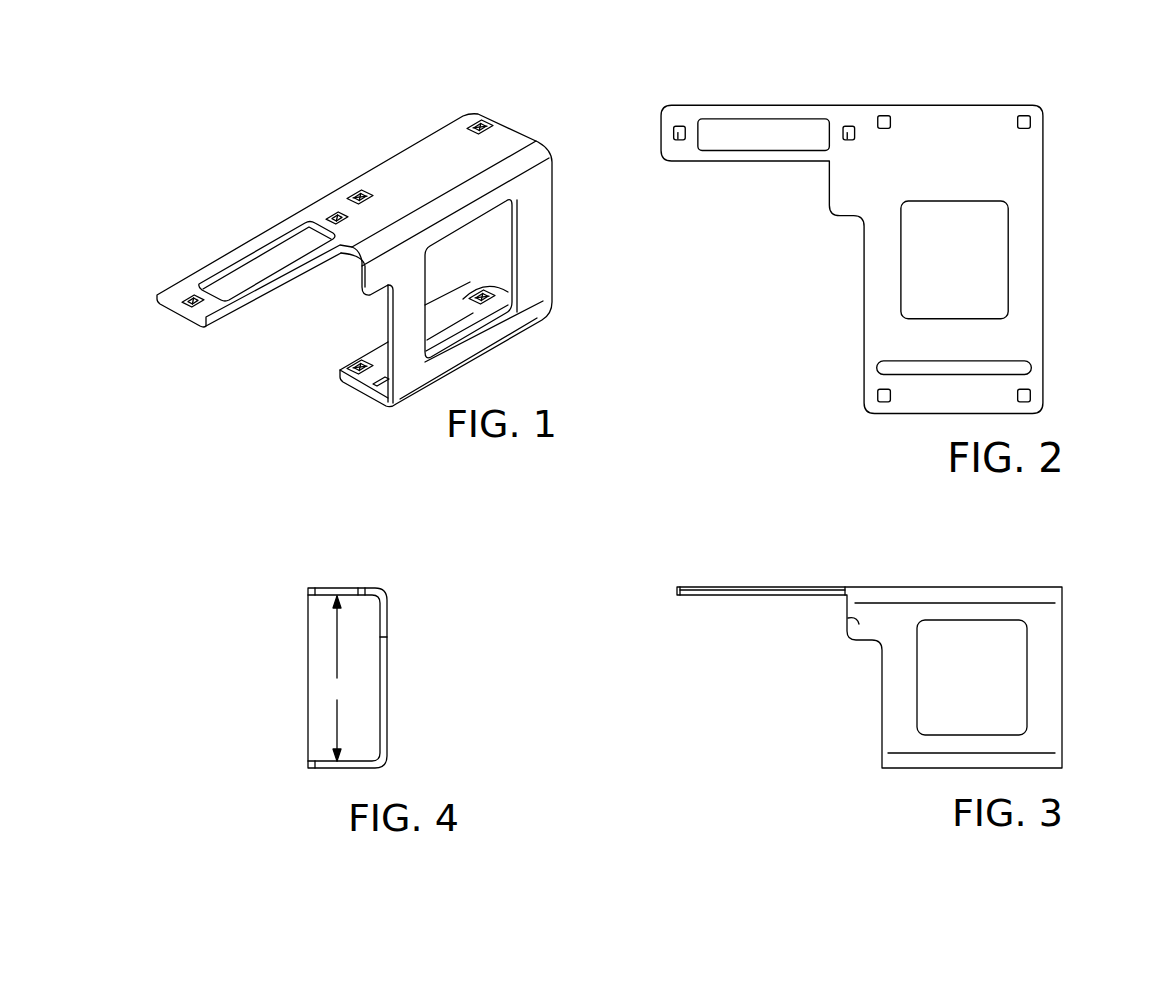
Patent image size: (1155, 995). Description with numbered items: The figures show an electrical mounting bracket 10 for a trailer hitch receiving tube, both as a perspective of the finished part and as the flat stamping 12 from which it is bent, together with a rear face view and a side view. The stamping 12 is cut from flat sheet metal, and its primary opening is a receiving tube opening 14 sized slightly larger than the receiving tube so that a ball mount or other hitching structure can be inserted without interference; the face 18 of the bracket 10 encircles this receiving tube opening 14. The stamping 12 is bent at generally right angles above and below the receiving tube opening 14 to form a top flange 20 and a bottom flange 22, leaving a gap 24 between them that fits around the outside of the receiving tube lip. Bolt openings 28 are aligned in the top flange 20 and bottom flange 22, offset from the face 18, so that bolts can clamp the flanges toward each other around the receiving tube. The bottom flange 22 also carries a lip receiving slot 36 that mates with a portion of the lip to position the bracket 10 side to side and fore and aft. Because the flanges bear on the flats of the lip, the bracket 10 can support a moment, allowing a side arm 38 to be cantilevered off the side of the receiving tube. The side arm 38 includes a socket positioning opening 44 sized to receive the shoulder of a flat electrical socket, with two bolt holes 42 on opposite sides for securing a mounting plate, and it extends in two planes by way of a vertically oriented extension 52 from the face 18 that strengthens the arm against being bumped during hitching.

In FIG. 1, the electrical mounting bracket 10 is at (255, 122).
In FIG. 3, the electrical mounting bracket 10 is at (745, 693).
In FIG. 4, the electrical mounting bracket 10 is at (248, 647).
In FIG. 2, the stamping 12 is at (998, 294).
In FIG. 1, the receiving tube opening 14 is at (493, 268).
In FIG. 2, the receiving tube opening 14 is at (942, 252).
In FIG. 3, the receiving tube opening 14 is at (972, 695).
In FIG. 1, the face 18 is at (532, 302).
In FIG. 2, the face 18 is at (1005, 280).
In FIG. 3, the face 18 is at (905, 685).
In FIG. 4, the face 18 is at (388, 697).
In FIG. 1, the top flange 20 is at (433, 160).
In FIG. 2, the top flange 20 is at (968, 150).
In FIG. 3, the top flange 20 is at (795, 586).
In FIG. 4, the top flange 20 is at (340, 587).
In FIG. 1, the bottom flange 22 is at (377, 355).
In FIG. 2, the bottom flange 22 is at (940, 383).
In FIG. 4, the bottom flange 22 is at (345, 770).
In FIG. 4, the gap 24 is at (337, 678).
In FIG. 1, the bolt openings 28 is at (487, 122).
In FIG. 2, the bolt openings 28 is at (1005, 112).
In FIG. 1, the lip receiving slot 36 is at (473, 327).
In FIG. 2, the lip receiving slot 36 is at (880, 350).
In FIG. 1, the side arm 38 is at (193, 285).
In FIG. 2, the side arm 38 is at (737, 108).
In FIG. 3, the side arm 38 is at (765, 596).
In FIG. 1, the bolt holes 42 is at (195, 302).
In FIG. 2, the bolt holes 42 is at (838, 135).
In FIG. 1, the socket positioning opening 44 is at (293, 250).
In FIG. 2, the socket positioning opening 44 is at (760, 123).
In FIG. 1, the extension 52 is at (370, 295).
In FIG. 2, the extension 52 is at (826, 202).
In FIG. 3, the extension 52 is at (848, 618).